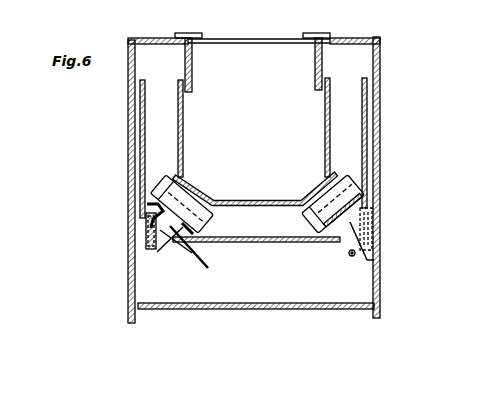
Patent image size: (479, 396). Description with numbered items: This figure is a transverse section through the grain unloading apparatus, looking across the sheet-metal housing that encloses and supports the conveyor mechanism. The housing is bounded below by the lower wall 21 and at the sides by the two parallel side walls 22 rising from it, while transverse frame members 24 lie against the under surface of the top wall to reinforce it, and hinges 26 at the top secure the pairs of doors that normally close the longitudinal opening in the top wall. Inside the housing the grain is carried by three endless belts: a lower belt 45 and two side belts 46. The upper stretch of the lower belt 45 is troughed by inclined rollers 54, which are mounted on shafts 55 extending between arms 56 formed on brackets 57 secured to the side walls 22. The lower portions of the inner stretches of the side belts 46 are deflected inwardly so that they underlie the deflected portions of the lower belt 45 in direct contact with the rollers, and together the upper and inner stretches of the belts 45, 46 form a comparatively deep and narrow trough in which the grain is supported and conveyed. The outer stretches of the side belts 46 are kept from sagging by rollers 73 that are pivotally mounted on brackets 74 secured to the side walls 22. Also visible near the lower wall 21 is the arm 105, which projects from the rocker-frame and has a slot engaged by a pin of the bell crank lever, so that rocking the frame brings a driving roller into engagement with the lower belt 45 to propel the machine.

The lower wall 21 is at (273, 310).
The side walls 22 is at (130, 126).
The transverse frame members 24 is at (283, 36).
The hinges 26 is at (188, 34).
The lower belt 45 is at (242, 236).
The side belts 46 is at (145, 127).
The inclined rollers 54 is at (184, 178).
The shafts 55 is at (306, 222).
The arms 56 is at (206, 238).
The brackets 57 is at (398, 243).
The rollers 73 is at (136, 222).
The brackets 74 is at (380, 221).
The arm 105 is at (349, 257).